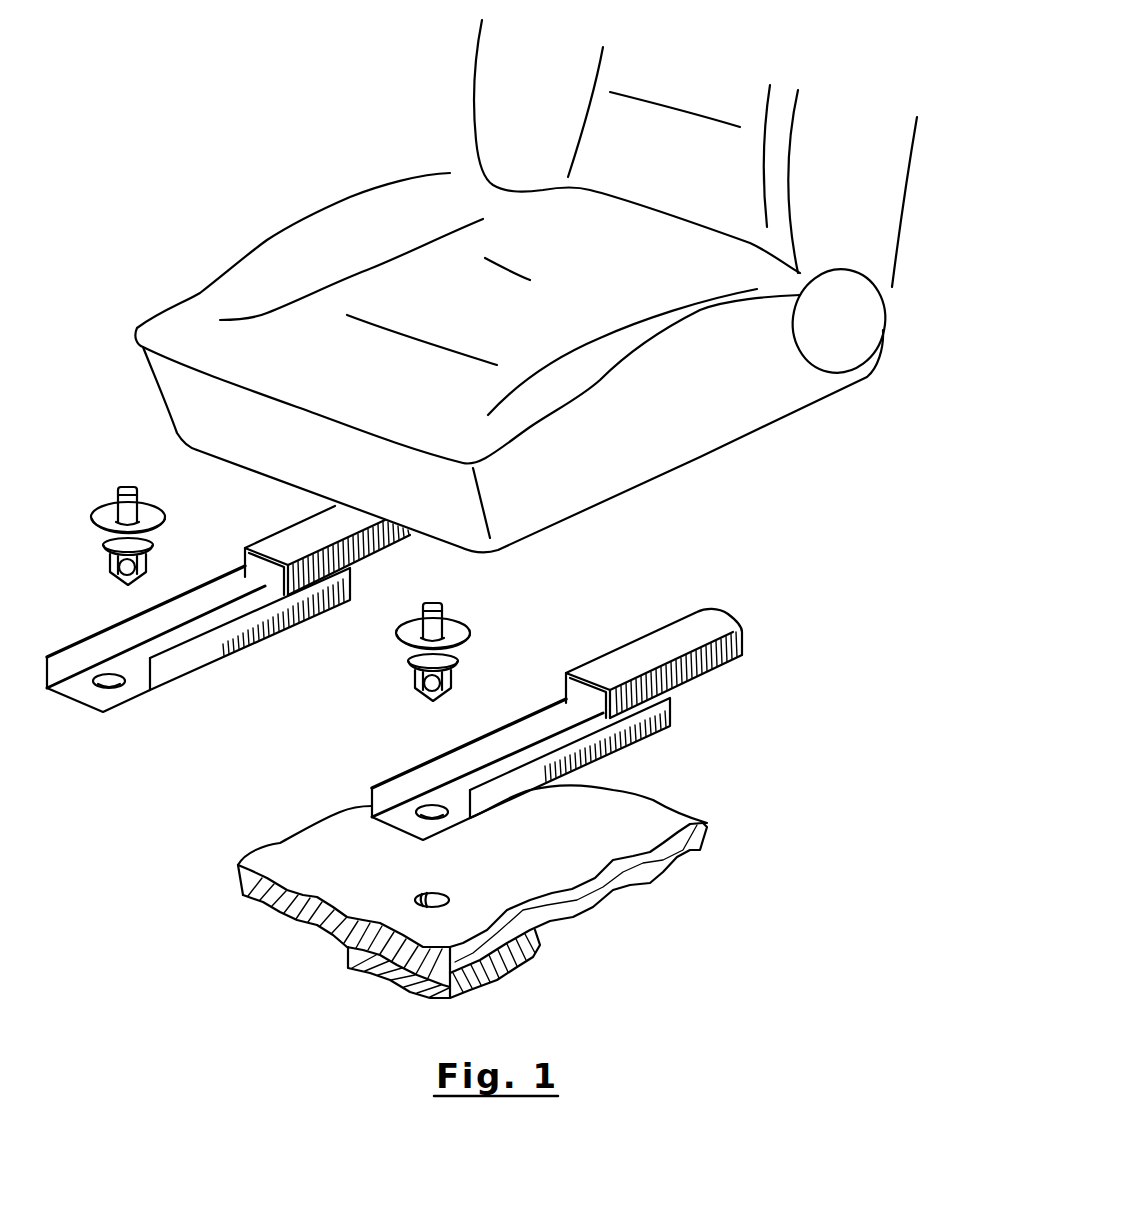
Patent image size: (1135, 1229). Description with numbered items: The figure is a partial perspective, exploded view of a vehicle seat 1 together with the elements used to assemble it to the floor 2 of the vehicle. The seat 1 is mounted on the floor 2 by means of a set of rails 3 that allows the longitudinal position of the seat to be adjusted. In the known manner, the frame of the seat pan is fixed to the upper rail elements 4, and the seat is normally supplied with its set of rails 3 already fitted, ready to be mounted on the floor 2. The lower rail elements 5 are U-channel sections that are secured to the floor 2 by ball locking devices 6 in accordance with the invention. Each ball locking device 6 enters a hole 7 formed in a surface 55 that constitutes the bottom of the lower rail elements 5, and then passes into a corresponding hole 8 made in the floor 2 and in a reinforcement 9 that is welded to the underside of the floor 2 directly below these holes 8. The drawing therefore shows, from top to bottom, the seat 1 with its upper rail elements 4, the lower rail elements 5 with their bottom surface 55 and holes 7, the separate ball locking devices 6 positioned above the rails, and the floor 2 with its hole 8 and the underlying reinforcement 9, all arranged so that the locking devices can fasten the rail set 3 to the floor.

The vehicle seat 1 is at (700, 457).
The floor 2 is at (472, 877).
The set of rails 3 is at (232, 548).
The upper rail elements 4 is at (283, 530).
The lower rail elements 5 is at (358, 709).
The surface 55 is at (457, 783).
The ball locking device 6 is at (96, 506).
The holes 7 is at (117, 688).
The holes 8 is at (424, 894).
The reinforcement 9 is at (511, 982).